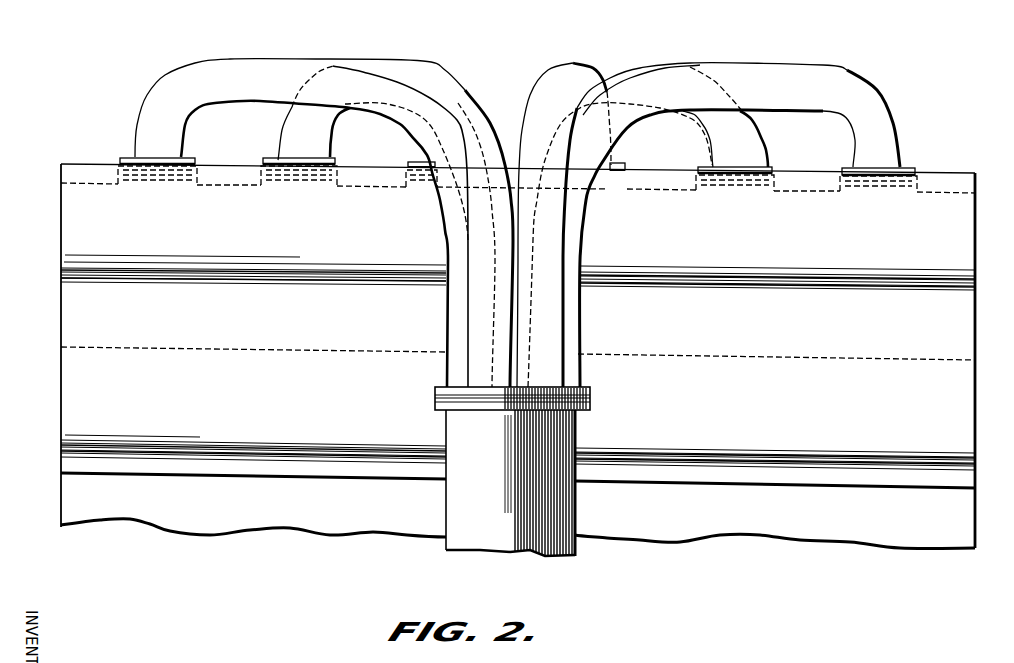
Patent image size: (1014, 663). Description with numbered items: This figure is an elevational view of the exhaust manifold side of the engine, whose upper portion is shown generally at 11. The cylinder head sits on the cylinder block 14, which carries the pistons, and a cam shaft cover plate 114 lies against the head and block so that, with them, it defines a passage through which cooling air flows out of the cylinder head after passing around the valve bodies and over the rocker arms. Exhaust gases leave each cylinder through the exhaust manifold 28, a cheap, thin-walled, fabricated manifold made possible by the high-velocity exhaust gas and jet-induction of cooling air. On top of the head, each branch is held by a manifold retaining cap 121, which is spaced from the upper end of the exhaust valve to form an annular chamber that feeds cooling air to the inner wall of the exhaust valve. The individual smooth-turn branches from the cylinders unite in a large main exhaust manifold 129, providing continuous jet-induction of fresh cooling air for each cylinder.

The upper portion of an engine 11 is at (56, 211).
The cylinder block 14 is at (72, 498).
The exhaust manifold 28 is at (168, 104).
The cam shaft cover plate 114 is at (70, 313).
The manifold retaining cap 121 is at (837, 167).
The main exhaust manifold 129 is at (462, 427).